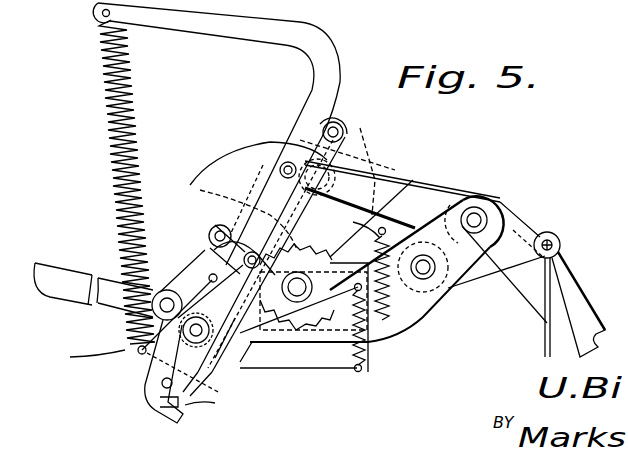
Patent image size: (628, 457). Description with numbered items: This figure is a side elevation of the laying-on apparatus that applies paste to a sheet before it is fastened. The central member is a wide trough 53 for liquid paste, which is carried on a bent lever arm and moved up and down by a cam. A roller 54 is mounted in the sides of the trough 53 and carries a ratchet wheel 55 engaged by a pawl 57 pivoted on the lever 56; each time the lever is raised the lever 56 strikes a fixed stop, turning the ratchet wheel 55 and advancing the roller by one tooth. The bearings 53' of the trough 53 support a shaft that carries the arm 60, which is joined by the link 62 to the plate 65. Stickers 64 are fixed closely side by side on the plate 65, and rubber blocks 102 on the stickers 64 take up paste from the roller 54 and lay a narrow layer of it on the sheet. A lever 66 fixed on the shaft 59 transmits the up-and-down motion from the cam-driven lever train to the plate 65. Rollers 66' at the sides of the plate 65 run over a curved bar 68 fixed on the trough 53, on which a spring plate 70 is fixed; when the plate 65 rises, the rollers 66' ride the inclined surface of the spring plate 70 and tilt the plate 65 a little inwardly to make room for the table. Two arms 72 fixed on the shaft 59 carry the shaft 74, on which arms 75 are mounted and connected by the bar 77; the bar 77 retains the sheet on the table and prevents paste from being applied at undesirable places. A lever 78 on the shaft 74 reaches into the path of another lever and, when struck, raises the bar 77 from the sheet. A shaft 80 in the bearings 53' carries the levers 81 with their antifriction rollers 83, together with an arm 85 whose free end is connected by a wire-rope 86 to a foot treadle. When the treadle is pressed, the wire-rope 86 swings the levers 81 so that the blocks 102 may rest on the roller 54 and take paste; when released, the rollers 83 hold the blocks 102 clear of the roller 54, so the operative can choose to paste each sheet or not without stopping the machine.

The link 62 is at (305, 50).
The spring plate 70 is at (126, 256).
The arm 72 is at (233, 163).
The curved bar 68 is at (217, 182).
The antifriction roller 83 is at (352, 150).
The lever 81 is at (356, 168).
The shaft 80 is at (420, 262).
The arm 60 is at (427, 200).
The shaft 59 is at (480, 218).
The wire-rope 86 is at (545, 334).
The arm 85 is at (524, 252).
The lever 66 is at (590, 304).
The bearings 53' is at (489, 274).
The roller 54 is at (298, 292).
The trough 53 is at (365, 309).
The ratchet wheel 55 is at (303, 272).
The lever 56 is at (250, 345).
The pawl 57 is at (286, 324).
The roller 66' is at (205, 244).
The plate 65 is at (200, 372).
The stickers 64 is at (152, 398).
The bar 77 is at (178, 418).
The rubber block 102 is at (188, 408).
The shaft 74 is at (132, 338).
The lever 78 is at (100, 298).
The arm 75 is at (72, 353).